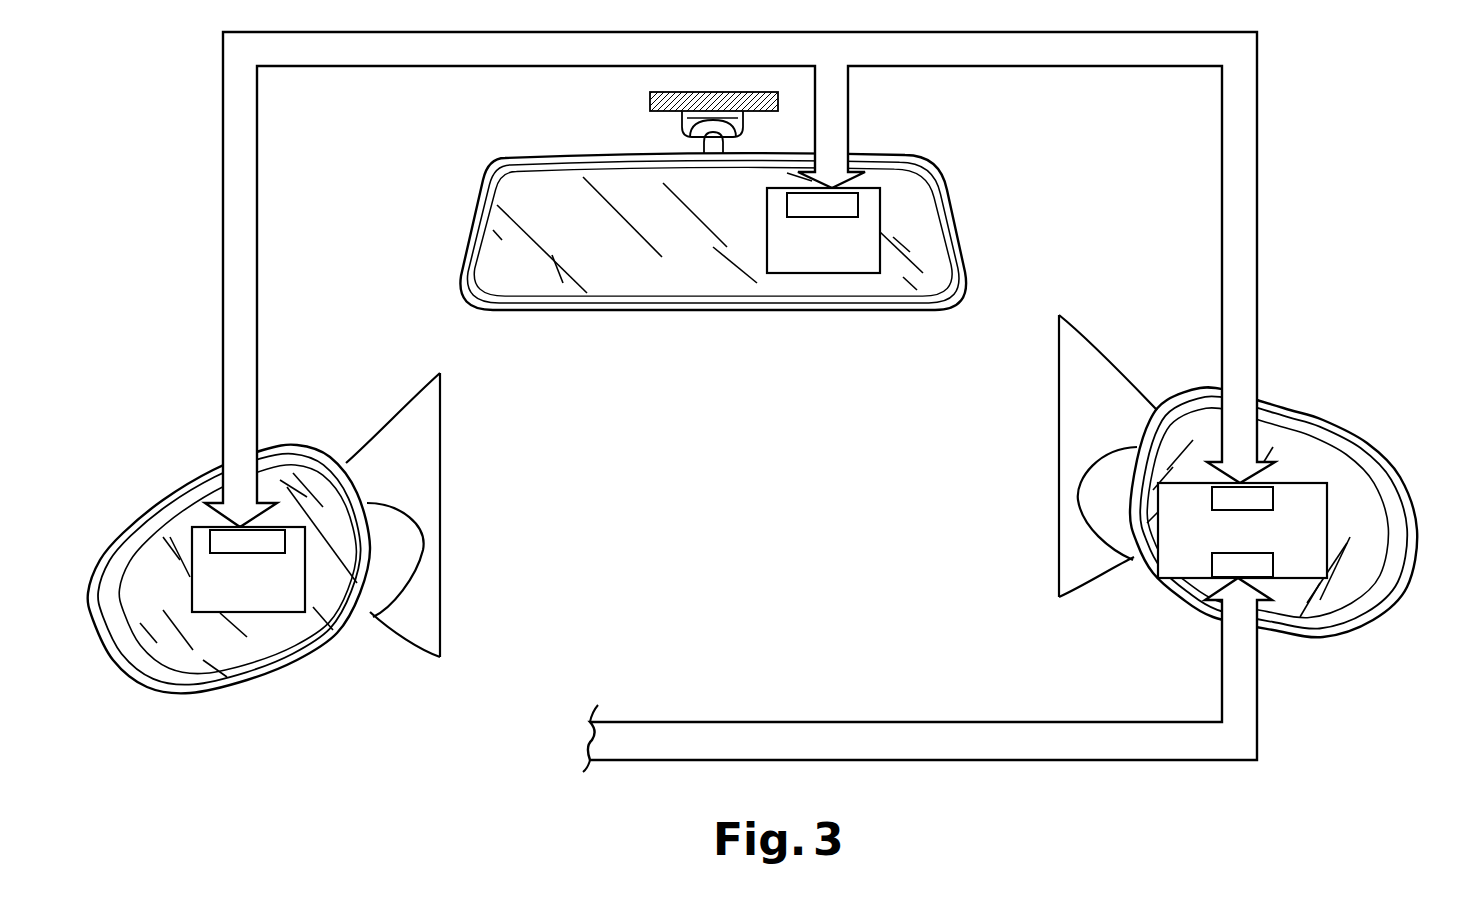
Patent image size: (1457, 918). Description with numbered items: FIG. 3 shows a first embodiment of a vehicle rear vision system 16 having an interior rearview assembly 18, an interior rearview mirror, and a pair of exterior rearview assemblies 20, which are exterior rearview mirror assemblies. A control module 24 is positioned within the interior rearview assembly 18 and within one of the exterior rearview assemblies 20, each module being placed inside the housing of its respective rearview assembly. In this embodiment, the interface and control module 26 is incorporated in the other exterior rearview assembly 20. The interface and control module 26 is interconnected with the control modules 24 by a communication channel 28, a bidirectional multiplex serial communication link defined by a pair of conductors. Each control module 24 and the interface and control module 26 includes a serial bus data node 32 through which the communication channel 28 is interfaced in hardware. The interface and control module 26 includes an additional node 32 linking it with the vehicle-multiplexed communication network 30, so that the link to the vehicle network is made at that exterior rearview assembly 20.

The vehicle rear vision system 16 is at (704, 491).
The interior rearview assembly 18 is at (750, 201).
The exterior rearview assembly 20 is at (769, 551).
The control module 24 is at (765, 240).
The interface and control module 26 is at (1290, 603).
The communication channel 28 is at (965, 70).
The vehicle-multiplexed communication network 30 is at (717, 722).
The serial bus data node 32 is at (860, 200).